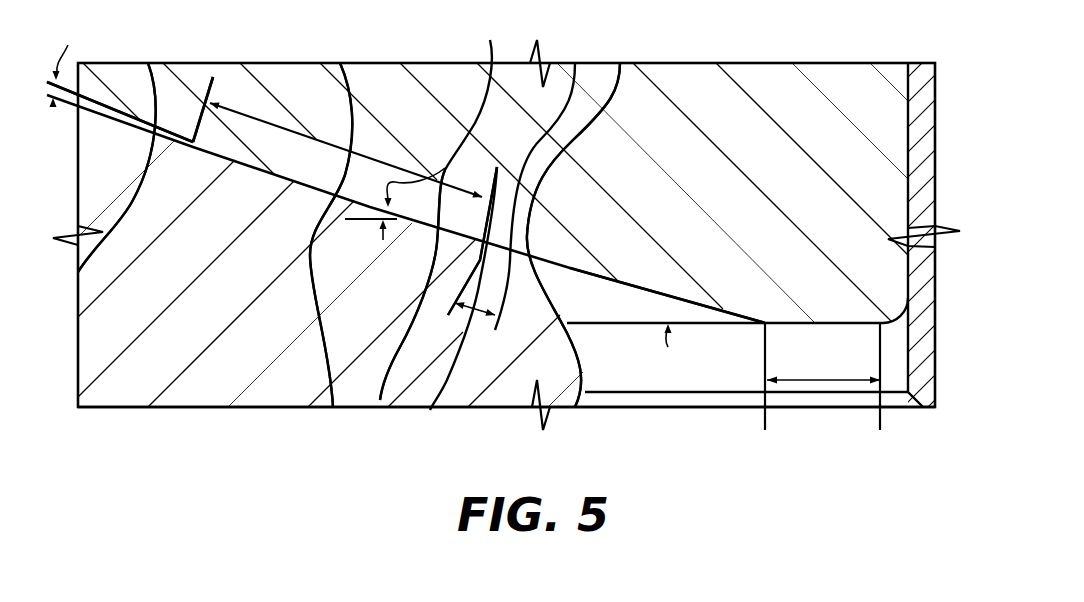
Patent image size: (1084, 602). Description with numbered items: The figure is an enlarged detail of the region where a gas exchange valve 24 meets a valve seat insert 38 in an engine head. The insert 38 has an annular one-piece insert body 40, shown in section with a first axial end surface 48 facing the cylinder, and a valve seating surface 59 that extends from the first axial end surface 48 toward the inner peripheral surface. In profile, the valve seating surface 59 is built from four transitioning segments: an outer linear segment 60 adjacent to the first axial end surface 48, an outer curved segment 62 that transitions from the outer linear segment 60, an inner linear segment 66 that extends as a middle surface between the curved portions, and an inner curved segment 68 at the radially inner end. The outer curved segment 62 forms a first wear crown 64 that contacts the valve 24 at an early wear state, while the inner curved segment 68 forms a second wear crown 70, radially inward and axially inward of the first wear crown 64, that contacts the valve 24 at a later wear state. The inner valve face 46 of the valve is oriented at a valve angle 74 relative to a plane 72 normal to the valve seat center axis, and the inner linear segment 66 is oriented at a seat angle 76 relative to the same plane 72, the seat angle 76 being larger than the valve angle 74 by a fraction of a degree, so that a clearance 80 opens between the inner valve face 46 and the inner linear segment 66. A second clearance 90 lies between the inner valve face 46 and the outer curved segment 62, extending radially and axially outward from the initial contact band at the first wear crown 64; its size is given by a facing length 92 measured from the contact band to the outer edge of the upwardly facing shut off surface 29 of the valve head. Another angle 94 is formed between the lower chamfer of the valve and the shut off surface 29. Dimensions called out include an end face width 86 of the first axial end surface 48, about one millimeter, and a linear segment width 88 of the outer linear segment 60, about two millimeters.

The gas exchange valve 24 is at (195, 387).
The upwardly facing shut off surface 29 is at (380, 400).
The valve seat insert 38 is at (783, 60).
The insert body 40 is at (826, 170).
The inner valve face 46 is at (333, 407).
The first axial end surface 48 is at (828, 325).
The valve seating surface 59 is at (442, 212).
The outer linear segment 60 is at (637, 282).
The outer curved segment 62 is at (575, 63).
The first wear crown 64 is at (620, 63).
The inner linear segment 66 is at (340, 63).
The inner curved segment 68 is at (148, 63).
The second wear crown 70 is at (191, 130).
The plane 72 is at (490, 407).
The valve angle 74 is at (417, 205).
The seat angle 76 is at (679, 288).
The clearance 80 is at (78, 272).
The end face width 86 is at (816, 392).
The linear segment width 88 is at (283, 106).
The second clearance 90 is at (575, 407).
The facing length 92 is at (430, 410).
The angle 94 is at (53, 106).